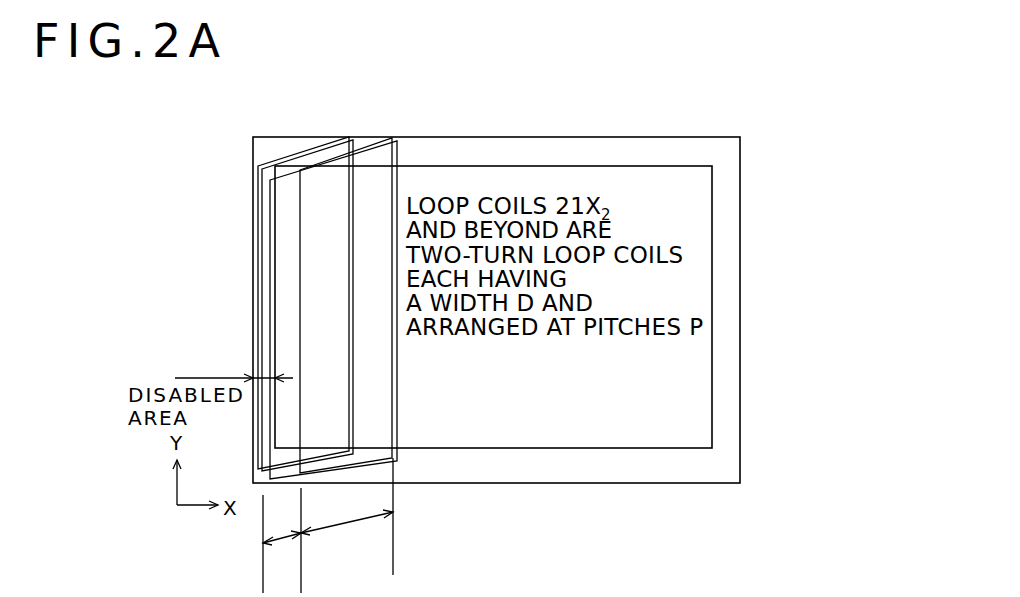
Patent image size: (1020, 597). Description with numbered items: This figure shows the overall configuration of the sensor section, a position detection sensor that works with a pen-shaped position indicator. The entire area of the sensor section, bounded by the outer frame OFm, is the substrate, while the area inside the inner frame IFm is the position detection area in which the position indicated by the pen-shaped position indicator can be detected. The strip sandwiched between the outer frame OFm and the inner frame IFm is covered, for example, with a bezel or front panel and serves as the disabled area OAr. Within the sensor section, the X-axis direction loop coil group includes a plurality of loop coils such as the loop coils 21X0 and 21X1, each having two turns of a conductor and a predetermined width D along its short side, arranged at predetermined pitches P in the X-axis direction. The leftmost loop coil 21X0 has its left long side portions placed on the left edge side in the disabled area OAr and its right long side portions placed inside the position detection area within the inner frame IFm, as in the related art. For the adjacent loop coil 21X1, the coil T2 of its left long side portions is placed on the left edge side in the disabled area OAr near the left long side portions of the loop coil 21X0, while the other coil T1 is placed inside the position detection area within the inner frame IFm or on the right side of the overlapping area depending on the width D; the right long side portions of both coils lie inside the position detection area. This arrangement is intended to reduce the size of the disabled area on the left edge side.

The outer frame OFm is at (557, 483).
The inner frame IFm is at (557, 447).
The loop coil 21X0 is at (313, 136).
The loop coil 21X1 is at (340, 282).
The coil T1 is at (300, 255).
The coil T2 is at (270, 302).
The disabled area OAr is at (234, 366).
The pitch P is at (282, 540).
The width D is at (347, 516).